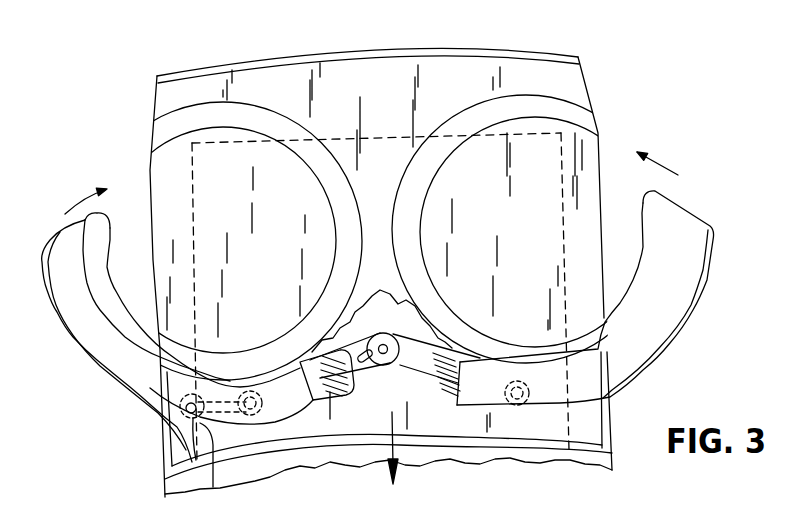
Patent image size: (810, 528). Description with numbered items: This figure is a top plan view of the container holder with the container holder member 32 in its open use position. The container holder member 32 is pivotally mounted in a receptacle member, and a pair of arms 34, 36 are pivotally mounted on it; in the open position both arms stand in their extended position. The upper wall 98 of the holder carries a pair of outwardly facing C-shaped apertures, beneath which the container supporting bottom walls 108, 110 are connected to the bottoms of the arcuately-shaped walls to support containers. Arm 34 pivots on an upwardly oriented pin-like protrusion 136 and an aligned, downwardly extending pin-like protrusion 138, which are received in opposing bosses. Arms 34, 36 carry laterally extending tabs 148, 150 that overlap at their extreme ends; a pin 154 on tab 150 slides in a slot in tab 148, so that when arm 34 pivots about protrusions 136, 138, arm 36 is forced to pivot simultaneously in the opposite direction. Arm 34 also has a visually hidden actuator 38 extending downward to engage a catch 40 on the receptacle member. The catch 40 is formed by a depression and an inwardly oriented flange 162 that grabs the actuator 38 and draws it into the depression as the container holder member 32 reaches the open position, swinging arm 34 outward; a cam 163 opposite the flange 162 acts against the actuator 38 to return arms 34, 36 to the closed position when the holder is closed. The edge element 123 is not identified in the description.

The container holder member 32 is at (503, 44).
The arm 34 is at (63, 333).
The arm 36 is at (697, 311).
The actuator 38 is at (194, 403).
The catch 40 is at (165, 433).
The upper wall 98 is at (397, 103).
The container supporting bottom wall 108 is at (238, 207).
The container supporting bottom wall 110 is at (499, 205).
The top edge 123 is at (332, 48).
The upwardly oriented pin-like protrusion 136 is at (410, 412).
The downwardly extending pin-like protrusion 138 is at (250, 416).
The tab 148 is at (337, 380).
The tab 150 is at (388, 370).
The pin 154 is at (376, 333).
The flange 162 is at (182, 397).
The cam 163 is at (213, 486).